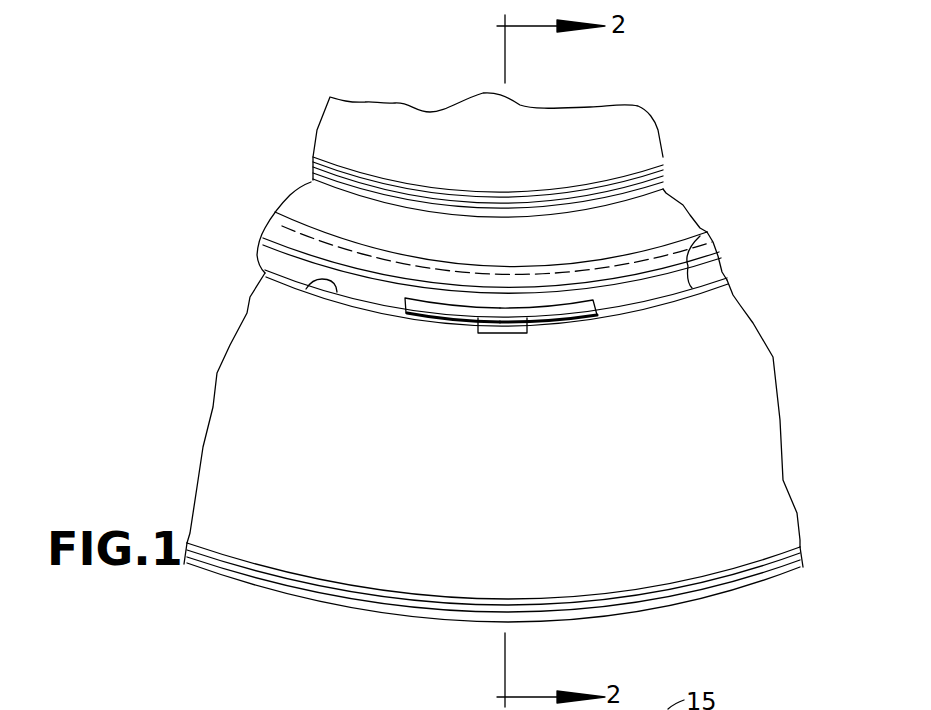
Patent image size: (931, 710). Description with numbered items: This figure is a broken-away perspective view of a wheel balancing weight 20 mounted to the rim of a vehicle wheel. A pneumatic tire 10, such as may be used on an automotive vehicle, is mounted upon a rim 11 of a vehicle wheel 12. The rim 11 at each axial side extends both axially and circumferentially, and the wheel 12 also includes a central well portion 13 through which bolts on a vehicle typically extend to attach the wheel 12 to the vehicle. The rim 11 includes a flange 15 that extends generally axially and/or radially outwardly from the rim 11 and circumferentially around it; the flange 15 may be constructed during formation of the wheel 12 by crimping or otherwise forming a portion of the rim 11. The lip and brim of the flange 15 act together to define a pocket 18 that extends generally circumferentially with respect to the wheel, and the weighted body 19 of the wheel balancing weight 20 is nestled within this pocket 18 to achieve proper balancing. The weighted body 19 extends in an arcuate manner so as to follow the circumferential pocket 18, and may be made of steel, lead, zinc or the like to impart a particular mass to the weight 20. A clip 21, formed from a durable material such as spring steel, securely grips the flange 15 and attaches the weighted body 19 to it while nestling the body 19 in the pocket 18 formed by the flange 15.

The tire 10 is at (607, 531).
The rim 11 is at (690, 201).
The wheel 12 is at (540, 146).
The central well portion 13 is at (385, 223).
The flange 15 is at (703, 236).
The pocket 18 is at (312, 286).
The weighted body 19 is at (430, 306).
The wheel balancing weight 20 is at (580, 309).
The clip 21 is at (507, 333).